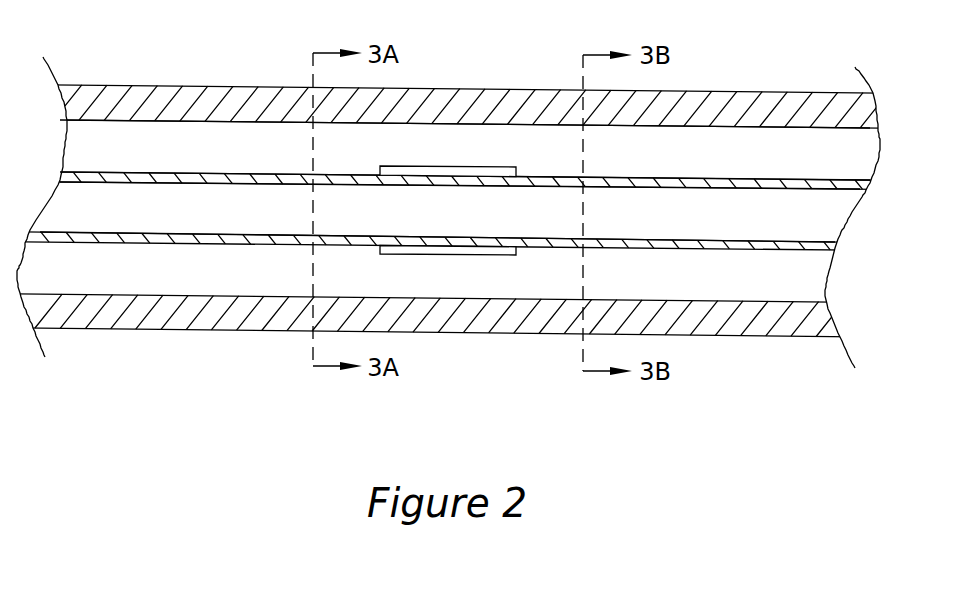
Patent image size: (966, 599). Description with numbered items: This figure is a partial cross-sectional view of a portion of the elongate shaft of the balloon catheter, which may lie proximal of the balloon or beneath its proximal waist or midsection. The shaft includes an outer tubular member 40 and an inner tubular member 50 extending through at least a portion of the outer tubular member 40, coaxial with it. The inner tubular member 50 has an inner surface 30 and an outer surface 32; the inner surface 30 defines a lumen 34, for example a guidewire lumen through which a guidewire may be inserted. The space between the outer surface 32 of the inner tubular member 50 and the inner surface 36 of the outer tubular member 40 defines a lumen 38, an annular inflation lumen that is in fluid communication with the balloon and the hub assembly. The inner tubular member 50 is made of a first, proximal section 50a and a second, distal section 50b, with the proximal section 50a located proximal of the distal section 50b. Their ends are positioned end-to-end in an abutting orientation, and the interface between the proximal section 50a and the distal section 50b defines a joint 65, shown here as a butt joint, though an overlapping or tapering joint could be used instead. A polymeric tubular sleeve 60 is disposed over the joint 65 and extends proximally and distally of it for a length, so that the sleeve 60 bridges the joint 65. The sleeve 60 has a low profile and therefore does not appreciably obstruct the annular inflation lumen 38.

The inner surface 30 is at (483, 214).
The outer surface 32 is at (483, 312).
The lumen 34 is at (692, 230).
The inner surface 36 is at (483, 113).
The lumen 38 is at (748, 168).
The outer tubular member 40 is at (143, 95).
The inner tubular member 50 is at (728, 246).
The proximal section 50a is at (238, 176).
The distal section 50b is at (835, 184).
The polymeric tubular sleeve 60 is at (467, 256).
The joint 65 is at (447, 183).